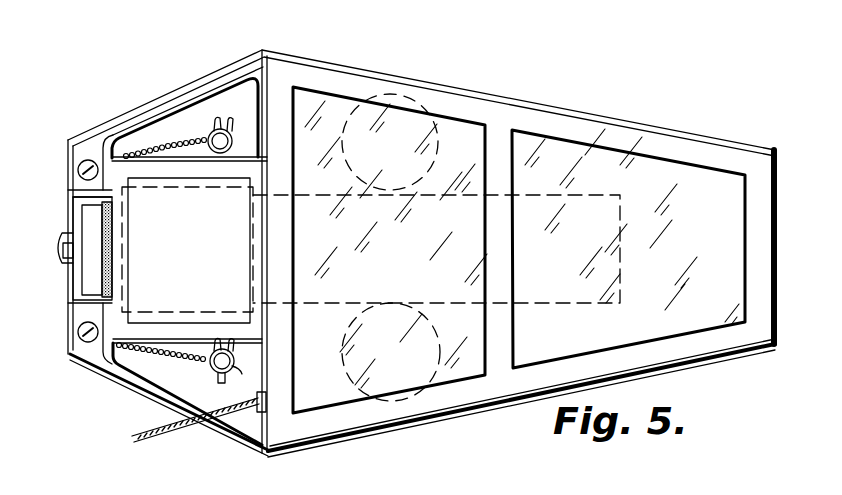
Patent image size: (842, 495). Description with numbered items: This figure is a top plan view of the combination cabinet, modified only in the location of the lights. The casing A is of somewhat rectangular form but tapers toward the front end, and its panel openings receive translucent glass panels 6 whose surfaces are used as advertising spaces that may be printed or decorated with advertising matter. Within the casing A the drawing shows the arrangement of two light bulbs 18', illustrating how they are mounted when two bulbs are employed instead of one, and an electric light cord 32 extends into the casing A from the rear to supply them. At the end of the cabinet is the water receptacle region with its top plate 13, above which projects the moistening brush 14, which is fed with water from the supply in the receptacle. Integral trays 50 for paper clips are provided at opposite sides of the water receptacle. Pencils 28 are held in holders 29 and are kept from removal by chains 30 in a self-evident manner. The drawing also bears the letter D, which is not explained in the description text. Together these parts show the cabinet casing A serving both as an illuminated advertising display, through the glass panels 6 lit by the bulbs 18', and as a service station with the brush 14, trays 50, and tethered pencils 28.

The glass panels 6 is at (582, 157).
The light bulbs 18' is at (423, 252).
The moistening brush 14 is at (97, 270).
The top plate 13 is at (73, 328).
The door D is at (116, 372).
The casing A is at (352, 433).
The pencils 28 is at (217, 130).
The holders 29 is at (238, 116).
The chains 30 is at (175, 148).
The electric light cord 32 is at (156, 437).
The integral trays 50 is at (242, 93).